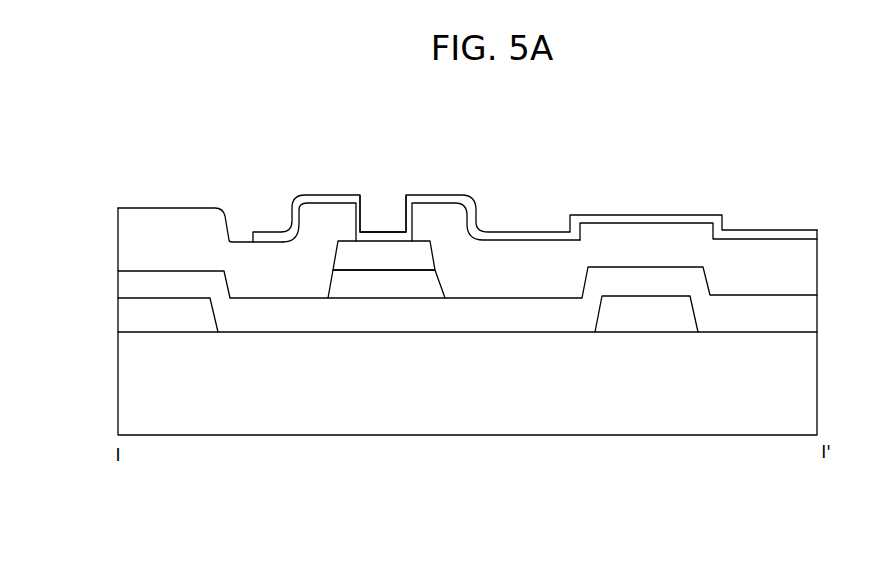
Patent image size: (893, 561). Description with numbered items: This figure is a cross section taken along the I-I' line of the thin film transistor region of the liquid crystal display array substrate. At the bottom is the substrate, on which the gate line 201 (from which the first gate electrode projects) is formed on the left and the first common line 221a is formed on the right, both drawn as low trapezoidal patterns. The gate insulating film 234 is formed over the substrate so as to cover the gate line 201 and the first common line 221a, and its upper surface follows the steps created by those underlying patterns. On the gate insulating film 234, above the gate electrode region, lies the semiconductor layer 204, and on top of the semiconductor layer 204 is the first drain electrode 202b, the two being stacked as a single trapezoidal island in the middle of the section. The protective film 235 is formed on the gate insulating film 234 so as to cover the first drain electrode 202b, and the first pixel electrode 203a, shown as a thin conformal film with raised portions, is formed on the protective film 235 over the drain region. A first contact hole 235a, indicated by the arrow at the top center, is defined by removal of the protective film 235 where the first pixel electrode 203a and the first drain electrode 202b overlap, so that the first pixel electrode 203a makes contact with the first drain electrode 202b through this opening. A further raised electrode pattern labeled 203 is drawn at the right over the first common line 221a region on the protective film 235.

The gate line 201 is at (173, 320).
The first drain electrode 202b is at (352, 258).
The semiconductor layer 204 is at (411, 285).
The first common line 221a is at (652, 322).
The gate insulating film 234 is at (811, 262).
The protective film 235 is at (564, 235).
The first contact hole 235a is at (387, 190).
The pixel electrode 203 is at (646, 216).
The first pixel electrode 203a is at (453, 199).